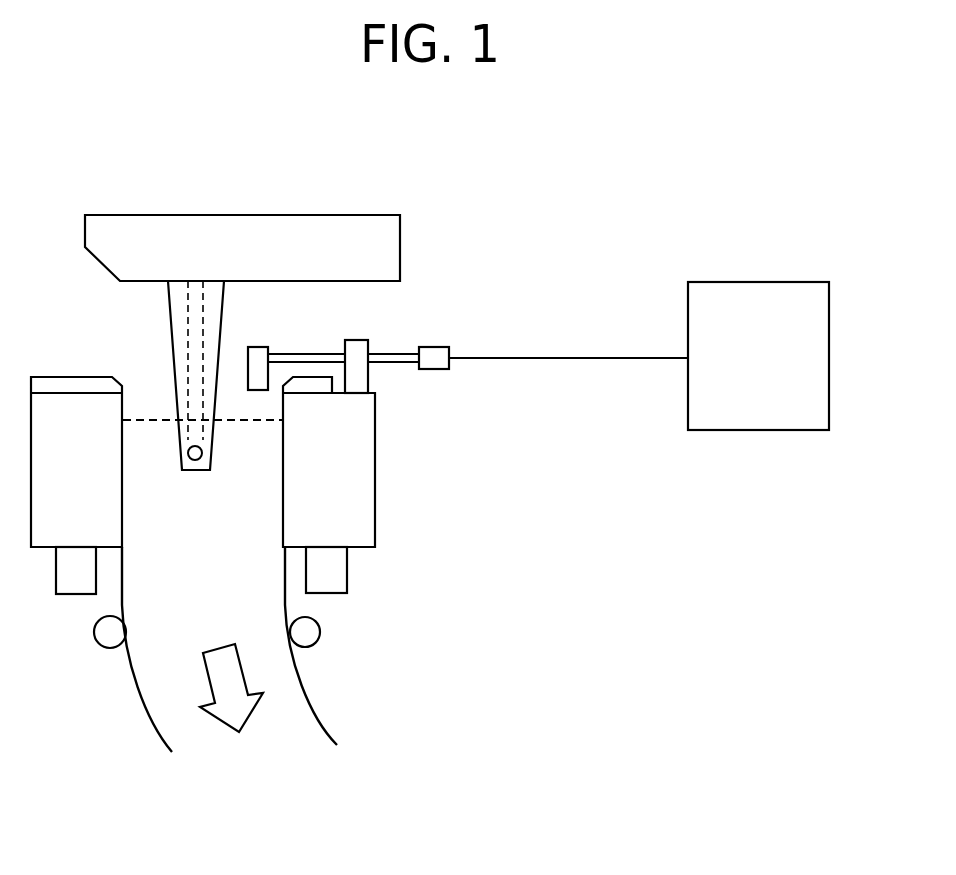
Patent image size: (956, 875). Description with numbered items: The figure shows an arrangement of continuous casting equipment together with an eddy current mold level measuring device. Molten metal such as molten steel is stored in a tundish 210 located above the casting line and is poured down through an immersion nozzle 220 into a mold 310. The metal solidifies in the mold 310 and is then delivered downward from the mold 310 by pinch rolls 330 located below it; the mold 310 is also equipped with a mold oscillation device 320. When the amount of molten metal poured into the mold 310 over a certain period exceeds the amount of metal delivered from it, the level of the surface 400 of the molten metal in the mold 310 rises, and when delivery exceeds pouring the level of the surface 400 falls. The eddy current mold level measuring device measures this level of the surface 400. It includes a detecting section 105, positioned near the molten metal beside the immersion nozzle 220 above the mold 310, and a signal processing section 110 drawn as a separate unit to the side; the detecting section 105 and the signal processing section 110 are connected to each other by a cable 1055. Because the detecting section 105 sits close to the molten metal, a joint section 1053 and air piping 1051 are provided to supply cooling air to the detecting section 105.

The tundish 210 is at (385, 240).
The immersion nozzle 220 is at (172, 363).
The detecting section 105 is at (262, 353).
The air piping 1051 is at (383, 355).
The joint section 1053 is at (441, 346).
The cable 1055 is at (543, 357).
The signal processing section 110 is at (788, 281).
The mold 310 is at (362, 483).
The mold oscillation device 320 is at (335, 587).
The pinch rolls 330 is at (310, 637).
The surface of the molten metal 400 is at (248, 423).